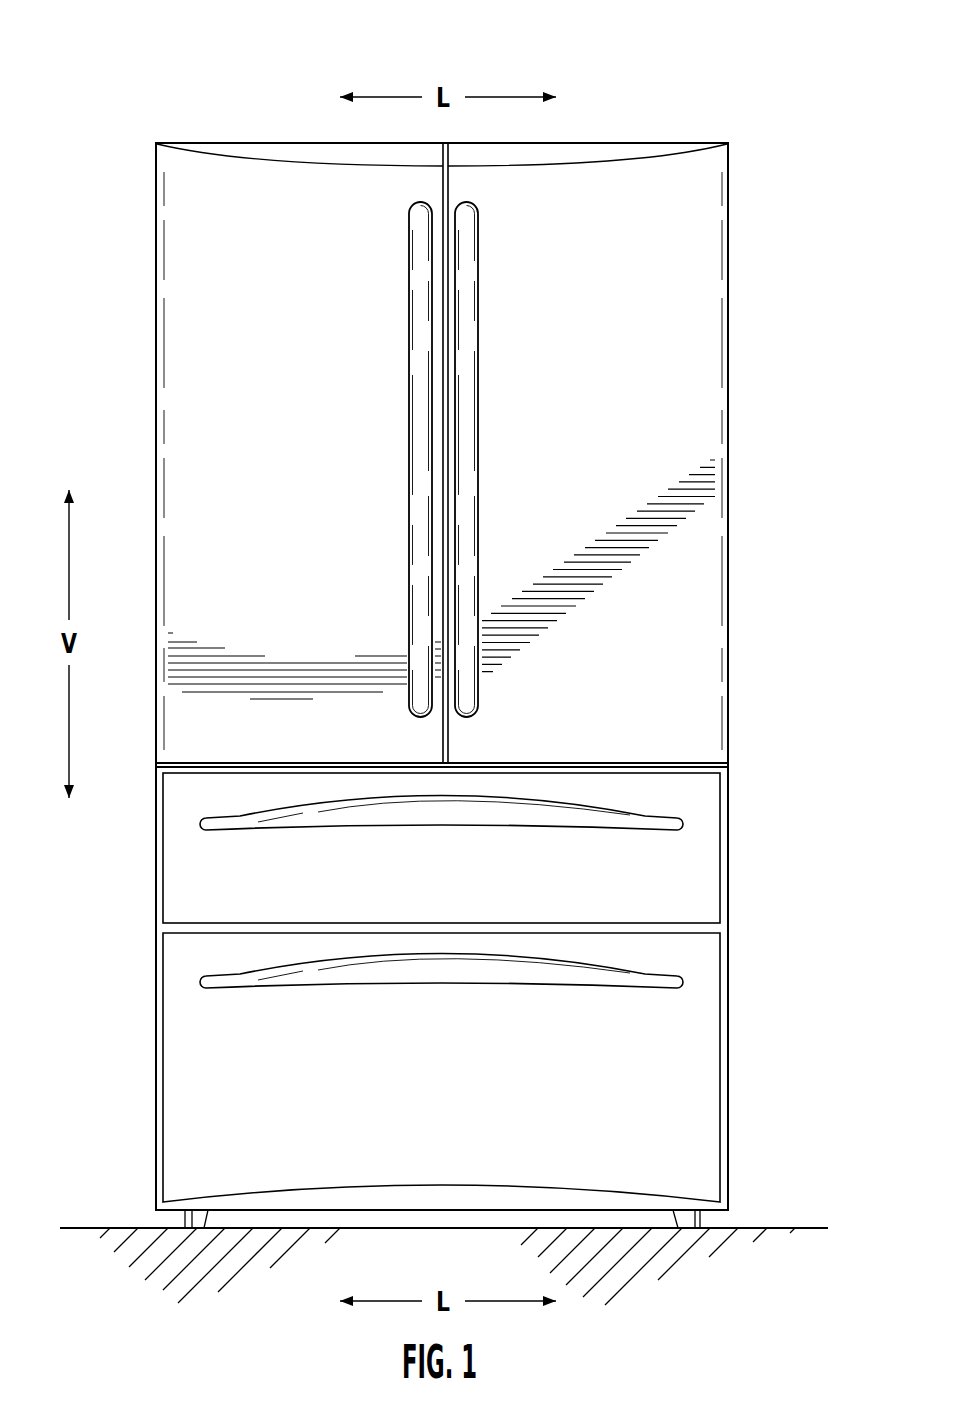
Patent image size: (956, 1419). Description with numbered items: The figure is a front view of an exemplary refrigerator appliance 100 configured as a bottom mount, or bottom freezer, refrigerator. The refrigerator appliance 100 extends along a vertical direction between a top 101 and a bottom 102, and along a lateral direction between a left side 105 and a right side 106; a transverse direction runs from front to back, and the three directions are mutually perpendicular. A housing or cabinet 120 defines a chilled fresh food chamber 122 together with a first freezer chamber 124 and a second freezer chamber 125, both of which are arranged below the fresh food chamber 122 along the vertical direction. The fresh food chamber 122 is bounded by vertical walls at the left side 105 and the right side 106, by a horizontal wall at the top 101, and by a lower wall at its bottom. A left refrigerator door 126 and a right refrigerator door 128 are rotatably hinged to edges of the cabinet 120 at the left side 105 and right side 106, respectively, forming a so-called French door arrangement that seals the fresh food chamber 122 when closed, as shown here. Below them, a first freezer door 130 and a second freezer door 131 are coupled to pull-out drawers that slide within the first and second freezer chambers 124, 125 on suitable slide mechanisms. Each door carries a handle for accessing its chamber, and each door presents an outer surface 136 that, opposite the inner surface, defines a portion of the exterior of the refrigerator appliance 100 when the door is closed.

The refrigerator appliance 100 is at (437, 653).
The top 101 is at (138, 50).
The bottom 102 is at (746, 1207).
The left side 105 is at (254, 422).
The right side 106 is at (626, 406).
The cabinet 120 is at (456, 985).
The fresh food chamber 122 is at (678, 440).
The first freezer chamber 124 is at (490, 845).
The second freezer chamber 125 is at (490, 1063).
The left refrigerator door 126 is at (197, 304).
The right refrigerator door 128 is at (689, 308).
The first freezer door 130 is at (680, 803).
The second freezer door 131 is at (680, 962).
The outer surface 136 is at (215, 437).